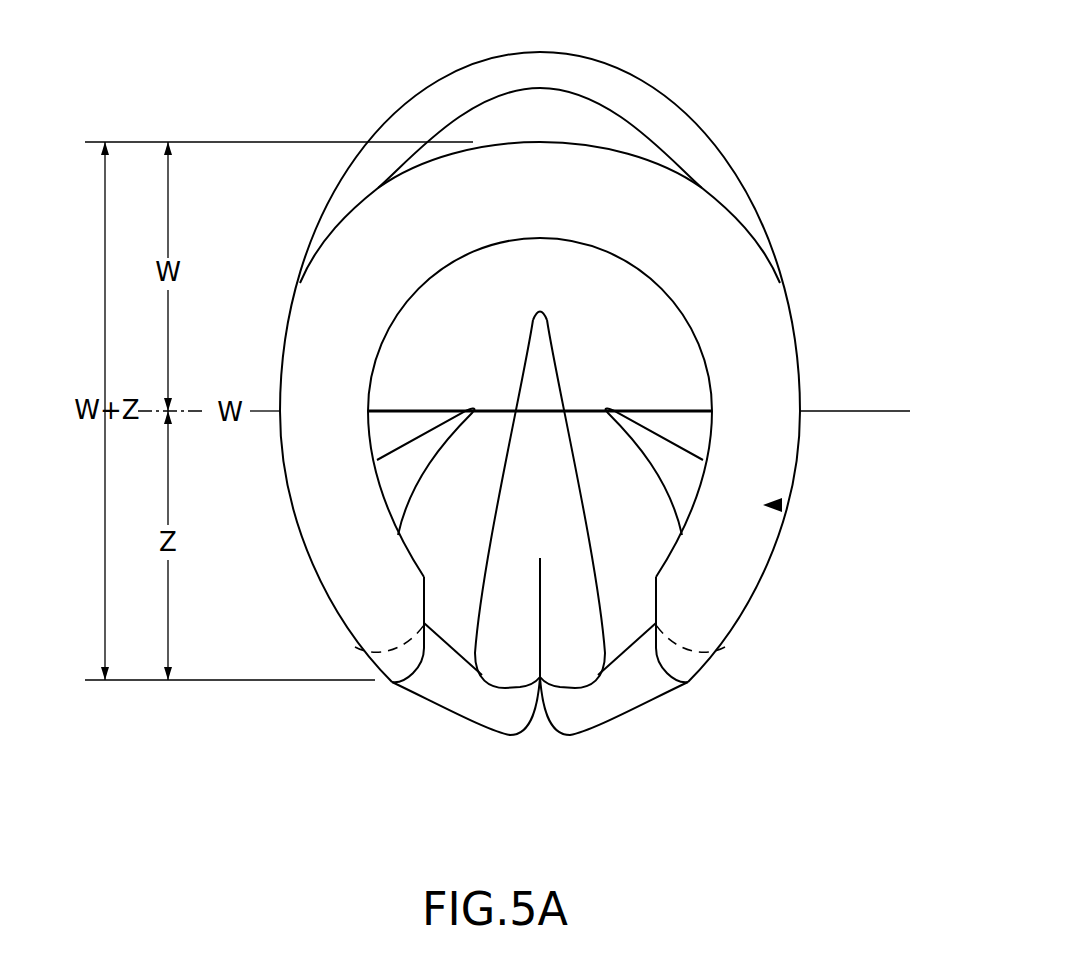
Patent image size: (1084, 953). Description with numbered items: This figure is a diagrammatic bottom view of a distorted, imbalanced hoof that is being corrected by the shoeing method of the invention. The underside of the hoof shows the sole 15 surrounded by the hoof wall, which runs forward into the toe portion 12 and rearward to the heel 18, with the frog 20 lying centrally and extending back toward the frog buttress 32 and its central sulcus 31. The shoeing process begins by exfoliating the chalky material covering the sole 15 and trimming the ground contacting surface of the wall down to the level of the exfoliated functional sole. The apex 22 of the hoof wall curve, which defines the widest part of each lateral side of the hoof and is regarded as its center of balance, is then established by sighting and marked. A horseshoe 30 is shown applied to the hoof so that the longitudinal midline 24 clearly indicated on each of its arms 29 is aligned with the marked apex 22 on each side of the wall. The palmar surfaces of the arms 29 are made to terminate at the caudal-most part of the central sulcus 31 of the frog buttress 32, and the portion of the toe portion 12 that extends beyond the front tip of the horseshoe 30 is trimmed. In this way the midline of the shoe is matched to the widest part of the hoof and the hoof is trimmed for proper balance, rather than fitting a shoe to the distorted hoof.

The toe portion 12 is at (618, 78).
The sole 15 is at (463, 311).
The heel 18 is at (379, 650).
The frog 20 is at (567, 495).
The apex of the hoof wall curve 22 is at (805, 410).
The longitudinal midline 24 is at (712, 423).
The arms 29 is at (342, 570).
The horseshoe 30 is at (780, 505).
The central sulcus 31 is at (548, 685).
The frog buttress 32 is at (482, 690).